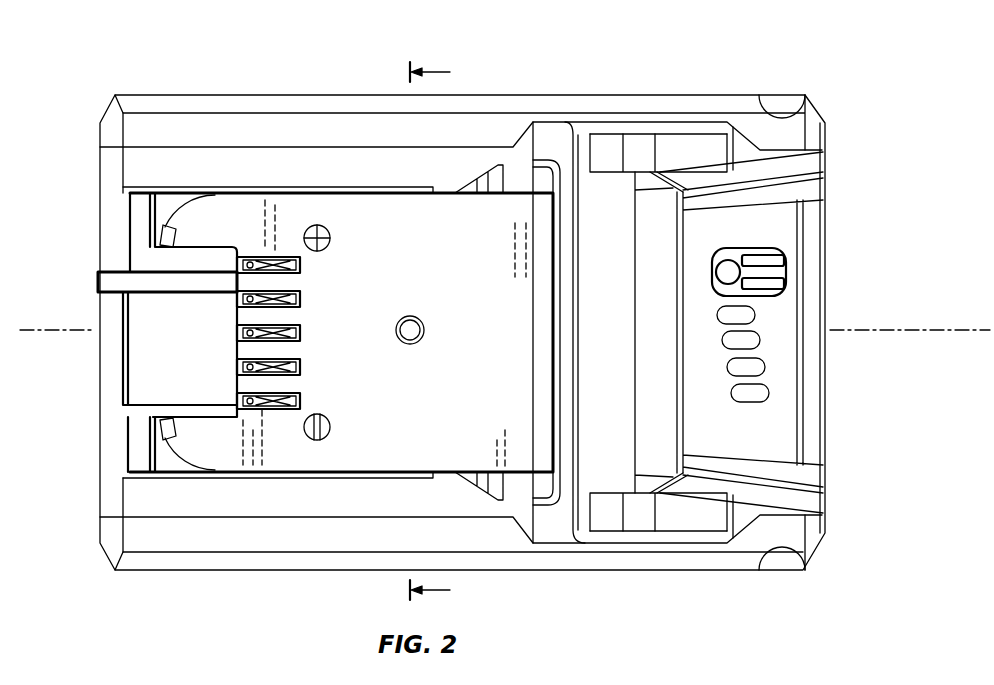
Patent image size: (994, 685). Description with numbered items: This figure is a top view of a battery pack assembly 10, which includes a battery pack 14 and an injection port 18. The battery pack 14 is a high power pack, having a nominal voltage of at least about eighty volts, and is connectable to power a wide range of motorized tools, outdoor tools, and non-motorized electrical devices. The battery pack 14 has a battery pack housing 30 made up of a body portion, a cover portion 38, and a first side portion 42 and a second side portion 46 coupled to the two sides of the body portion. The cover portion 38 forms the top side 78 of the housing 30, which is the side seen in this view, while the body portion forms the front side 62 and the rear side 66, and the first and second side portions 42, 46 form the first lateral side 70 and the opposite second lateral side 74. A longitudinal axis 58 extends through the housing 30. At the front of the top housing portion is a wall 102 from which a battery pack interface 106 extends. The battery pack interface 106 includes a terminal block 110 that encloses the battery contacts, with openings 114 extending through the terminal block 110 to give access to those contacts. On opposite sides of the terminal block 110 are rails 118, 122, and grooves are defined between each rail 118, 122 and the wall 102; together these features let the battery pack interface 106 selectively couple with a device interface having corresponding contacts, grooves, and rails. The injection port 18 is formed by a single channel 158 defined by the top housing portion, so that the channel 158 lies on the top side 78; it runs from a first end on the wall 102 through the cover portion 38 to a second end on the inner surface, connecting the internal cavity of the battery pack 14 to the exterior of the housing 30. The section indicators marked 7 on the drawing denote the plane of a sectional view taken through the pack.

The battery pack assembly 10 is at (126, 72).
The battery pack 14 is at (192, 85).
The injection port 18 is at (418, 322).
The battery pack housing 30 is at (584, 86).
The cover portion 38 is at (500, 213).
The first side portion 42 is at (635, 562).
The second side portion 46 is at (650, 97).
The longitudinal axis 58 is at (505, 307).
The front side 62 is at (100, 205).
The rear side 66 is at (826, 256).
The first lateral side 70 is at (722, 574).
The second lateral side 74 is at (748, 95).
The top side 78 is at (425, 395).
The wall 102 is at (148, 165).
The battery pack interface 106 is at (90, 250).
The terminal block 110 is at (235, 228).
The openings 114 is at (302, 335).
The rail 118 is at (280, 457).
The rail 122 is at (297, 210).
The channel 158 is at (405, 318).
The section line 7- 7 is at (438, 332).